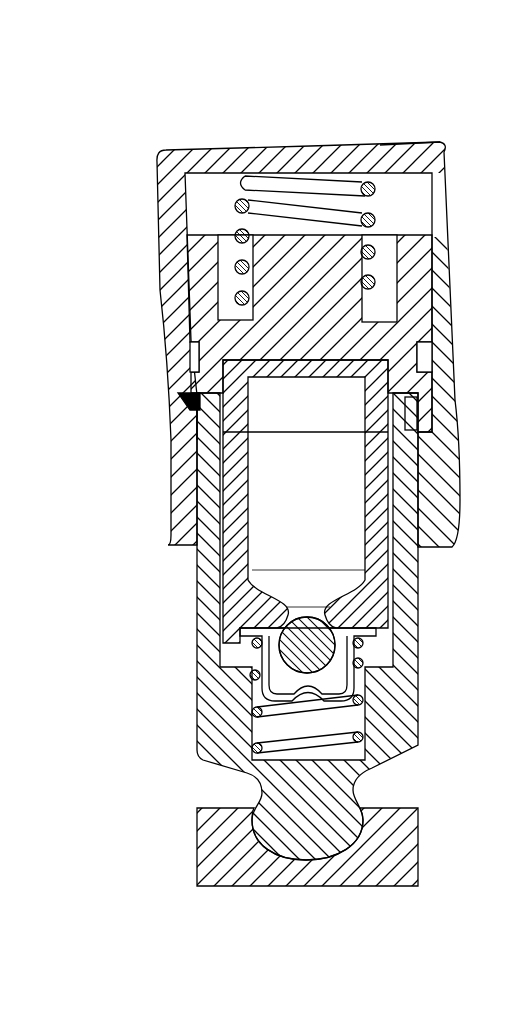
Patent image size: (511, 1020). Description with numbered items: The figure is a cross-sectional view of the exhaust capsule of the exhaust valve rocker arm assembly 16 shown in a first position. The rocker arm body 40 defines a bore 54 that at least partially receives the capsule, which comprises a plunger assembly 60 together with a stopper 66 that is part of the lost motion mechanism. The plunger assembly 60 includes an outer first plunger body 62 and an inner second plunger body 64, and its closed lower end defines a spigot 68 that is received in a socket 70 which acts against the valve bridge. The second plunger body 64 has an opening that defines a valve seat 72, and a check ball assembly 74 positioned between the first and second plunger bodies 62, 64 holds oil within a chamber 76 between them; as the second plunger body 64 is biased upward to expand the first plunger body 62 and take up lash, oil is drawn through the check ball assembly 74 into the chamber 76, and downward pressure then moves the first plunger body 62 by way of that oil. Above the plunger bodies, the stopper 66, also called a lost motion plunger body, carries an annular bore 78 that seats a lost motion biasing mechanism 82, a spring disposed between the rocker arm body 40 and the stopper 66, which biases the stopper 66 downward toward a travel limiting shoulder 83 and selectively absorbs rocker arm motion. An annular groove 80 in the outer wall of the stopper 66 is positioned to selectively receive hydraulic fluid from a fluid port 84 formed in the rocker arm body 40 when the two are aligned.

The exhaust valve rocker arm assembly 16 is at (121, 122).
The rocker arm body 40 is at (200, 158).
The bore 54 is at (408, 165).
The lost motion biasing mechanism 82 is at (375, 219).
The annular bore 78 is at (409, 277).
The fluid port 84 is at (163, 298).
The stopper 66 is at (185, 326).
The annular groove 80 is at (184, 378).
The travel limiting stop or shoulder 83 is at (200, 438).
The valve seat 72 is at (275, 611).
The plunger assembly 60 is at (177, 586).
The second plunger body 64 is at (386, 600).
The first plunger body 62 is at (207, 632).
The check ball assembly 74 is at (371, 658).
The chamber 76 is at (257, 688).
The spigot 68 is at (336, 835).
The socket 70 is at (403, 835).